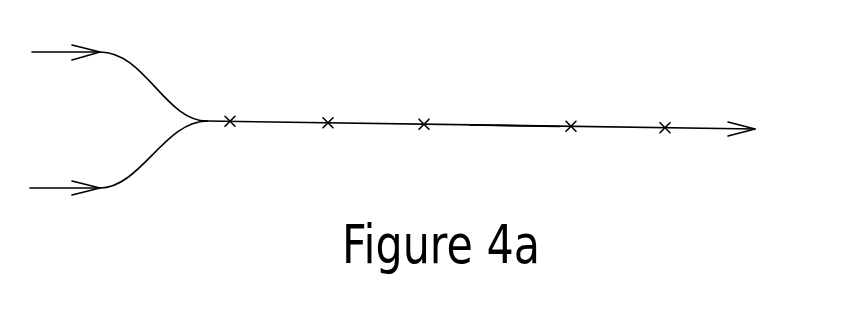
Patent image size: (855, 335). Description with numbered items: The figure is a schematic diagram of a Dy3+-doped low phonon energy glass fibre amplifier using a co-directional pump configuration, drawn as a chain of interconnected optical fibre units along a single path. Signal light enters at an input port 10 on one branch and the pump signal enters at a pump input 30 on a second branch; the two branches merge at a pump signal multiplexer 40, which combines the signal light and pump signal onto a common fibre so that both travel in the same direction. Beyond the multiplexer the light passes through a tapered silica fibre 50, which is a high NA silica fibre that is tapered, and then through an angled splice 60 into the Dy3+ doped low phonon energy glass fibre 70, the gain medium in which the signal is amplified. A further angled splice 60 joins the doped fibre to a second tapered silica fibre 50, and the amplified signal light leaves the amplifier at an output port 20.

The input port 10 is at (115, 188).
The output port 20 is at (705, 131).
The pump input 30 is at (40, 52).
The pump signal multiplexer 40 is at (230, 103).
The tapered silica fibre 50 is at (494, 107).
The angled splice 60 is at (496, 106).
The Dy3+ doped low phonon energy glass fibre 70 is at (511, 126).